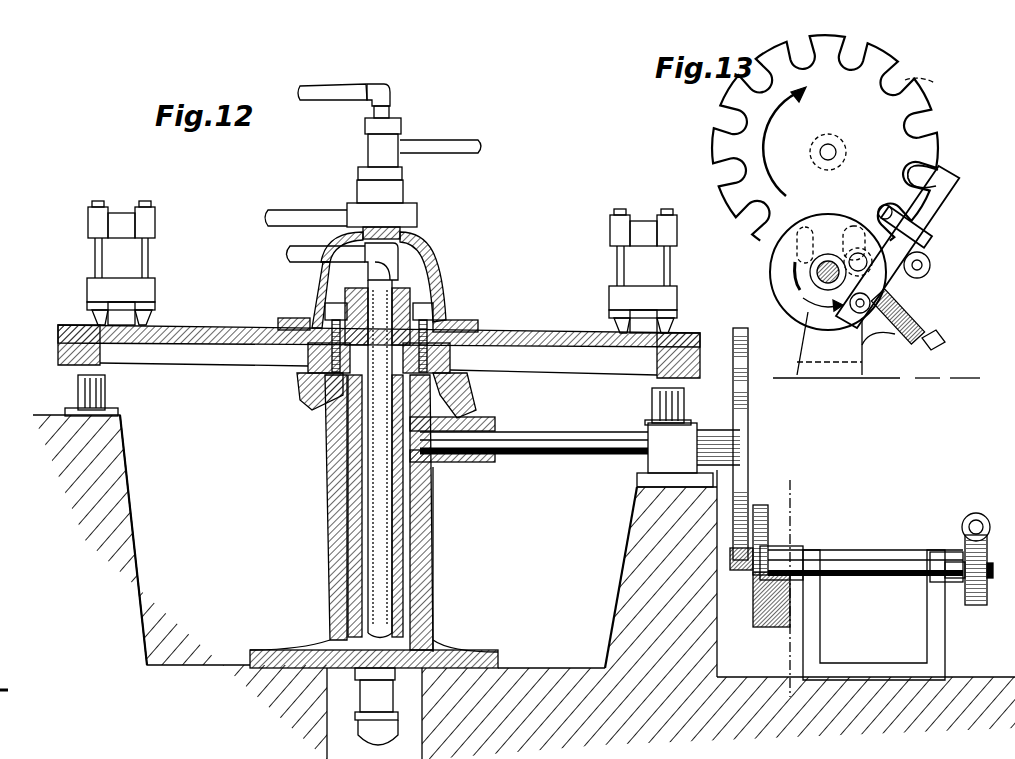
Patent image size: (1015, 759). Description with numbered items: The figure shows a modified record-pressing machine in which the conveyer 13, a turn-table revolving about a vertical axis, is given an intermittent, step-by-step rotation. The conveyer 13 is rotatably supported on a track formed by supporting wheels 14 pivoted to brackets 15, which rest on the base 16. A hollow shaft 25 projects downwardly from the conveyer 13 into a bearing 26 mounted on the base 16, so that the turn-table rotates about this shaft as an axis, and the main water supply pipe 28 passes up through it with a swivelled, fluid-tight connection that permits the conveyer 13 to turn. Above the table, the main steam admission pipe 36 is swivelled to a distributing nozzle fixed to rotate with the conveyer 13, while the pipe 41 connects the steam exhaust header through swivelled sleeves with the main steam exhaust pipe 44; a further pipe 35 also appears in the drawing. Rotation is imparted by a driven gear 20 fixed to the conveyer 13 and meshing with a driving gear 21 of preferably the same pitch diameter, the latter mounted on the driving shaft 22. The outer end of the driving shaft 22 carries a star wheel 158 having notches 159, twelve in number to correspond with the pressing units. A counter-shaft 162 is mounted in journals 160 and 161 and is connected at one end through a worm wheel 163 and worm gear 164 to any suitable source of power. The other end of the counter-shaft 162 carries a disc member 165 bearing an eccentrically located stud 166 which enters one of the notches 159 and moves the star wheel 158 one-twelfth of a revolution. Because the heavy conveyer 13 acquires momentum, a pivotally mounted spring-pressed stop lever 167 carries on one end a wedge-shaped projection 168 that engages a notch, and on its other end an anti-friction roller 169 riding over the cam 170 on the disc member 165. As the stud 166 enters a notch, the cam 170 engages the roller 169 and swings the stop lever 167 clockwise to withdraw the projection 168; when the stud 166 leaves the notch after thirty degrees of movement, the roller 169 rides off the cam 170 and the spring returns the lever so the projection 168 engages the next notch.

In FIG. 12, the conveyer 13 is at (213, 325).
In FIG. 12, the supporting wheels 14 is at (106, 389).
In FIG. 12, the brackets 15 is at (120, 413).
In FIG. 12, the base 16 is at (124, 490).
In FIG. 12, the driven gear 20 is at (452, 377).
In FIG. 12, the driving gear 21 is at (468, 407).
In FIG. 12, the driving shaft 22 is at (536, 443).
In FIG. 12, the hollow shaft 25 is at (346, 500).
In FIG. 12, the bearing 26 is at (328, 556).
In FIG. 12, the main water supply pipe 28 is at (376, 584).
In FIG. 12, the pipe 35 is at (286, 252).
In FIG. 12, the main steam admission pipe 36 is at (387, 117).
In FIG. 12, the pipe 41 is at (292, 214).
In FIG. 12, the main steam exhaust pipe 44 is at (456, 146).
In FIG. 12, the star wheel 158 is at (738, 330).
In FIG. 13, the star wheel 158 is at (825, 138).
In FIG. 13, the notches 159 is at (934, 120).
In FIG. 12, the journal 160 is at (818, 562).
In FIG. 12, the journal 161 is at (940, 552).
In FIG. 12, the counter-shaft 162 is at (883, 576).
In FIG. 12, the worm wheel 163 is at (975, 604).
In FIG. 12, the worm gear 164 is at (980, 513).
In FIG. 12, the disc member 165 is at (763, 505).
In FIG. 13, the disc member 165 is at (772, 264).
In FIG. 12, the stud 166 is at (741, 572).
In FIG. 13, the stud 166 is at (860, 248).
In FIG. 13, the stop lever 167 is at (938, 224).
In FIG. 13, the projection 168 is at (932, 170).
In FIG. 13, the anti-friction roller 169 is at (882, 323).
In FIG. 12, the cam 170 is at (773, 588).
In FIG. 13, the cam 170 is at (871, 345).